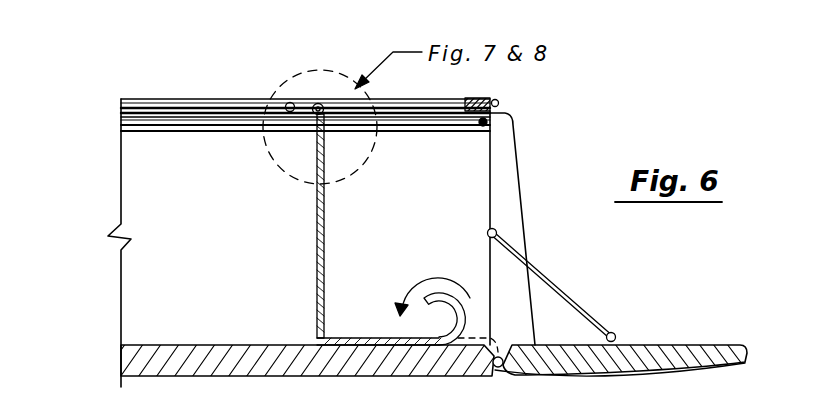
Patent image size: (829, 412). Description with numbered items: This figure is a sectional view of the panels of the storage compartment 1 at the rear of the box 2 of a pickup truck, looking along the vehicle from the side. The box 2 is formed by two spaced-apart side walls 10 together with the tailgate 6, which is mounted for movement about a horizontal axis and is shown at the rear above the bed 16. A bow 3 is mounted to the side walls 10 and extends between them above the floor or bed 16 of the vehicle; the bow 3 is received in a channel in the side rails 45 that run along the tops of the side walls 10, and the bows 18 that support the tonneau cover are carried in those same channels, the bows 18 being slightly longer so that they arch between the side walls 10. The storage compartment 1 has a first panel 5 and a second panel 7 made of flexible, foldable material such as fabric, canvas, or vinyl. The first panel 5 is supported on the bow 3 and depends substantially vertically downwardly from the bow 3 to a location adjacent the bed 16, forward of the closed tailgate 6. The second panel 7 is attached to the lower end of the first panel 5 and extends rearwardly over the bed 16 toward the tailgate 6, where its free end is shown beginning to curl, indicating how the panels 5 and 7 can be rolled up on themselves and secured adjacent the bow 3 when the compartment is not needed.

The storage compartment 1 is at (454, 186).
The box 2 is at (184, 194).
The bow 3 is at (320, 103).
The first panel 5 is at (324, 219).
The tailgate 6 is at (667, 345).
The second panel 7 is at (372, 338).
The side walls 10 is at (262, 256).
The bed 16 is at (213, 344).
The bows 18 is at (289, 102).
The side rails 45 is at (194, 92).